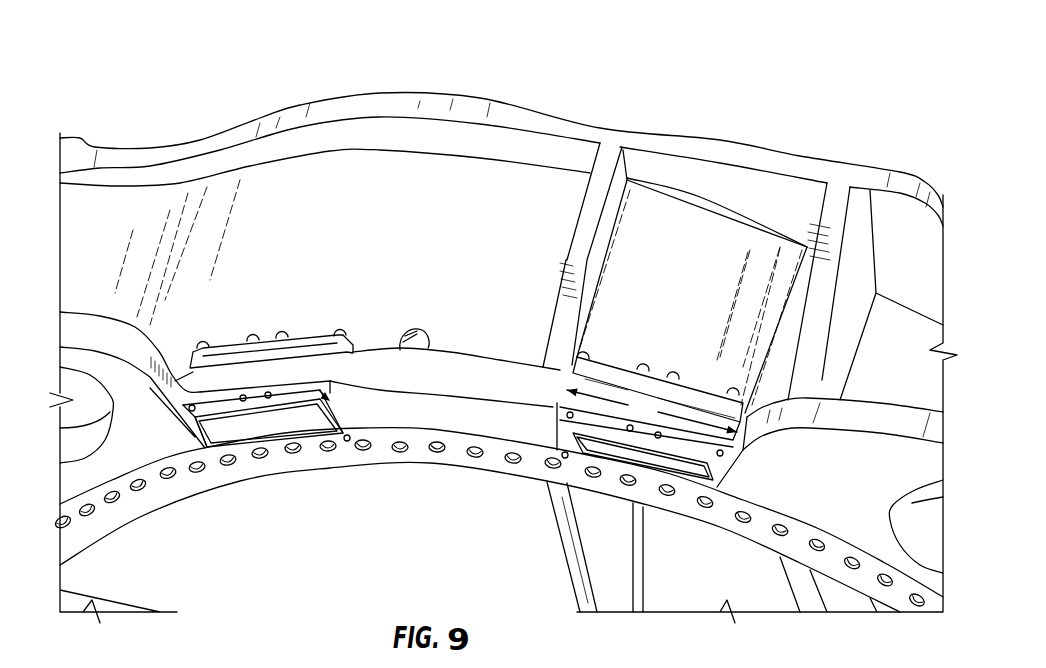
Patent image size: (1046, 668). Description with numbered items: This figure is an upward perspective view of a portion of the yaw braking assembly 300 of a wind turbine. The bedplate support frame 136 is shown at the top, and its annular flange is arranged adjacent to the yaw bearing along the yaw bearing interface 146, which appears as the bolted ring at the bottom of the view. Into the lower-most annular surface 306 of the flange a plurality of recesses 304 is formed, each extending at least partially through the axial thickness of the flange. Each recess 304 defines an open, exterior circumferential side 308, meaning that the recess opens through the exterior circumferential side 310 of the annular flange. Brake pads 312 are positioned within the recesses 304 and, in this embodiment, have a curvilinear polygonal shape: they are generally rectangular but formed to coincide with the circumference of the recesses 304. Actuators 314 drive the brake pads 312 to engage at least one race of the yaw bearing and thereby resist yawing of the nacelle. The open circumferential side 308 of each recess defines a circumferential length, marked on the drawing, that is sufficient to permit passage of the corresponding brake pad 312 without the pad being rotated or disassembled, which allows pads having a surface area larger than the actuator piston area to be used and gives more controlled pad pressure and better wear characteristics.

The bedplate support frame 136 is at (337, 113).
The yaw braking assembly 300 is at (824, 105).
The recesses 304 is at (553, 399).
The lower-most annular surface 306 is at (418, 419).
The open, exterior circumferential side 308 is at (219, 392).
The exterior circumferential side 310 is at (435, 367).
The brake pads 312 is at (238, 427).
The actuators 314 is at (298, 350).
The yaw bearing interface 146 is at (140, 517).